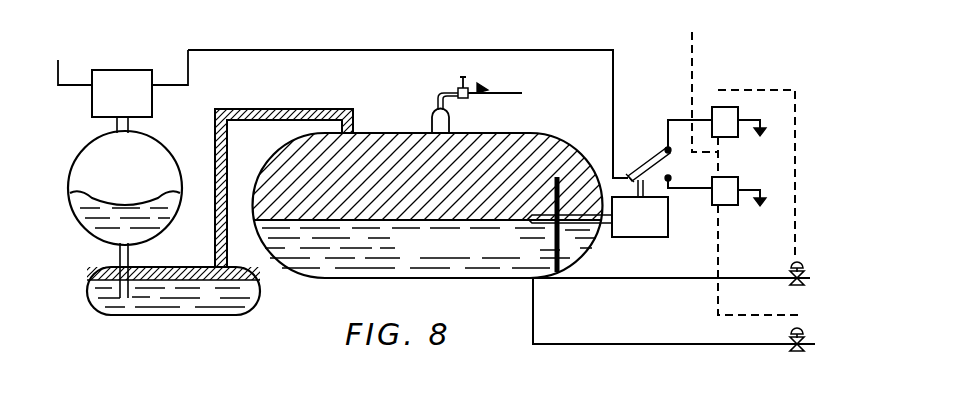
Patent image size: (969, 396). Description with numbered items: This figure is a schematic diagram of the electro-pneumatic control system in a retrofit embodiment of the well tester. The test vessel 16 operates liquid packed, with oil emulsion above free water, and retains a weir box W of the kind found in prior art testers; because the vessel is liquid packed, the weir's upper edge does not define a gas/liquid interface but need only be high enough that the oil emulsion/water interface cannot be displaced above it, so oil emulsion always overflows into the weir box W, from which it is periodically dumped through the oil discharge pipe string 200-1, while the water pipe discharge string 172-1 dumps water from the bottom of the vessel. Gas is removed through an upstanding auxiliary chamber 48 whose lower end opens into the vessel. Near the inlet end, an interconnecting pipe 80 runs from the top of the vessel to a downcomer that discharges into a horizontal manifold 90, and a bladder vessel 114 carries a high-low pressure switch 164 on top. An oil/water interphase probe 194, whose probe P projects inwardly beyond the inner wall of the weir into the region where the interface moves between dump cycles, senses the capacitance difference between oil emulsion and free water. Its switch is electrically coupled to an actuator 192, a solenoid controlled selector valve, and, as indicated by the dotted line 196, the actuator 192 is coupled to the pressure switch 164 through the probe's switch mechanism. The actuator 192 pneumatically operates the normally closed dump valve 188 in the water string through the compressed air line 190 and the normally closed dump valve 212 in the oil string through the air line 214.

The test vessel 16 is at (438, 280).
The auxiliary chamber 48 is at (432, 121).
The interconnecting pipe 80 is at (233, 108).
The manifold 90 is at (260, 287).
The bladder vessel 114 is at (70, 154).
The high-low pressure switch 164 is at (112, 70).
The dotted line 196 is at (355, 50).
The weir box W is at (560, 175).
The probe P is at (528, 223).
The oil/water interphase probe 194 is at (640, 237).
The actuator 192 is at (727, 177).
The compressed air line 190 is at (721, 250).
The air line 214 is at (738, 90).
The pneumatic dump valve 212 is at (799, 260).
The pneumatic dump valve 188 is at (800, 325).
The oil discharge pipe string 200-1 is at (684, 281).
The water pipe discharge string 172-1 is at (535, 318).